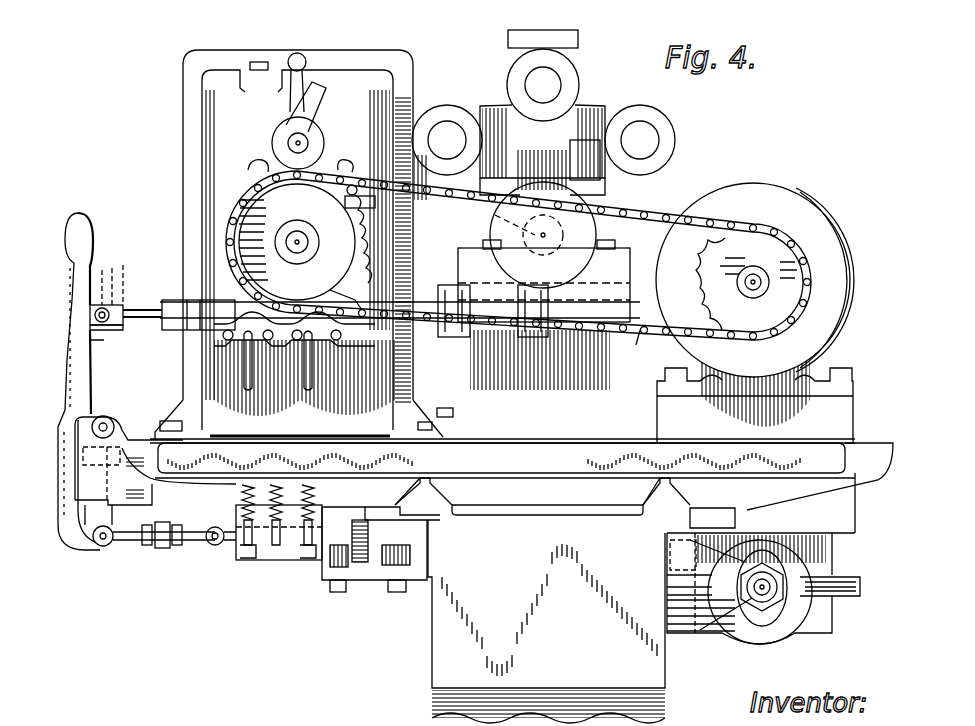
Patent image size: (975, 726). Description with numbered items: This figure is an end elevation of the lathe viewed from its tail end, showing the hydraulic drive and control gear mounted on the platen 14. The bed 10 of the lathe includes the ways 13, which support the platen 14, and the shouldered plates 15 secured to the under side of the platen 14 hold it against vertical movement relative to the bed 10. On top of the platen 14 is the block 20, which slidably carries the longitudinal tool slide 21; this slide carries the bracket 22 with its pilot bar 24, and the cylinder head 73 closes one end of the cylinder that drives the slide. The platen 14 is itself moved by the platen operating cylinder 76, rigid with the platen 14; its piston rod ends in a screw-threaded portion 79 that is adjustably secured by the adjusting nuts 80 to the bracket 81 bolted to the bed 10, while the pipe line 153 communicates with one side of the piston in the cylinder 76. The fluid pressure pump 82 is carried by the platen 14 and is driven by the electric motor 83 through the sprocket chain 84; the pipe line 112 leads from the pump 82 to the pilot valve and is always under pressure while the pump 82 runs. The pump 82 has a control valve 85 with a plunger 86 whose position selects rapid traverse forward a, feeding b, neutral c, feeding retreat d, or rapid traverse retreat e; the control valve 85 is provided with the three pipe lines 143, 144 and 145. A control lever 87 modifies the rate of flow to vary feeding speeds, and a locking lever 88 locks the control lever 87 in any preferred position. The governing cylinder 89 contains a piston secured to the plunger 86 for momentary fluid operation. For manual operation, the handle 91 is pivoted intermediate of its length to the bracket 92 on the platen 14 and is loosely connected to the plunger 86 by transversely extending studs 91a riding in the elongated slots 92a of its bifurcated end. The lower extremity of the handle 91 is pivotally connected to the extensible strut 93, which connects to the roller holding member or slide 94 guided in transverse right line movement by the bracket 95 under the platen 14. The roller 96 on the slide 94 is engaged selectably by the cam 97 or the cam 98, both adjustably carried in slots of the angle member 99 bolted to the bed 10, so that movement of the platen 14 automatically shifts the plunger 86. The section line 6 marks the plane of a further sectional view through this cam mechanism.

The bed 10 is at (445, 634).
The ways 13 is at (436, 500).
The platen 14 is at (868, 478).
The shouldered plates 15 is at (380, 506).
The block 20 is at (650, 320).
The longitudinal tool slide 21 is at (652, 290).
The bracket 22 is at (582, 140).
The pilot bar 24 is at (556, 86).
The cylinder head 73 is at (578, 255).
The platen operating cylinder 76 is at (800, 566).
The screw-threaded portion 79 is at (770, 590).
The adjusting nuts 80 is at (780, 600).
The bracket 81 is at (716, 572).
The fluid pressure pump 82 is at (212, 146).
The electric motor 83 is at (814, 220).
The sprocket chain 84 is at (653, 220).
The control valve 85 is at (316, 277).
The plunger 86 is at (143, 308).
The control lever 87 is at (306, 92).
The locking lever 88 is at (284, 136).
The governing cylinder 89 is at (487, 340).
The handle 91 is at (68, 348).
The transversely extending studs 91a is at (106, 324).
The bracket 92 is at (118, 432).
The elongated slots 92a is at (98, 340).
The extensible strut 93 is at (150, 541).
The roller holding member or slide 94 is at (222, 546).
The bracket 95 is at (272, 560).
The roller 96 is at (370, 545).
The cam 97 is at (412, 556).
The cam 98 is at (332, 566).
The angle member 99 is at (365, 582).
The pipe line 112 is at (378, 210).
The pipe line 143 is at (332, 296).
The pipe line 144 is at (308, 388).
The pipe line 145 is at (247, 388).
The pipe line 153 is at (848, 578).
The section line 6 is at (195, 546).
The rapid traverse forward position a is at (74, 290).
The feeding or cutting position b is at (99, 259).
The neutral position c is at (112, 259).
The feeding retreating position d is at (127, 255).
The rapid traverse retreating position e is at (128, 305).